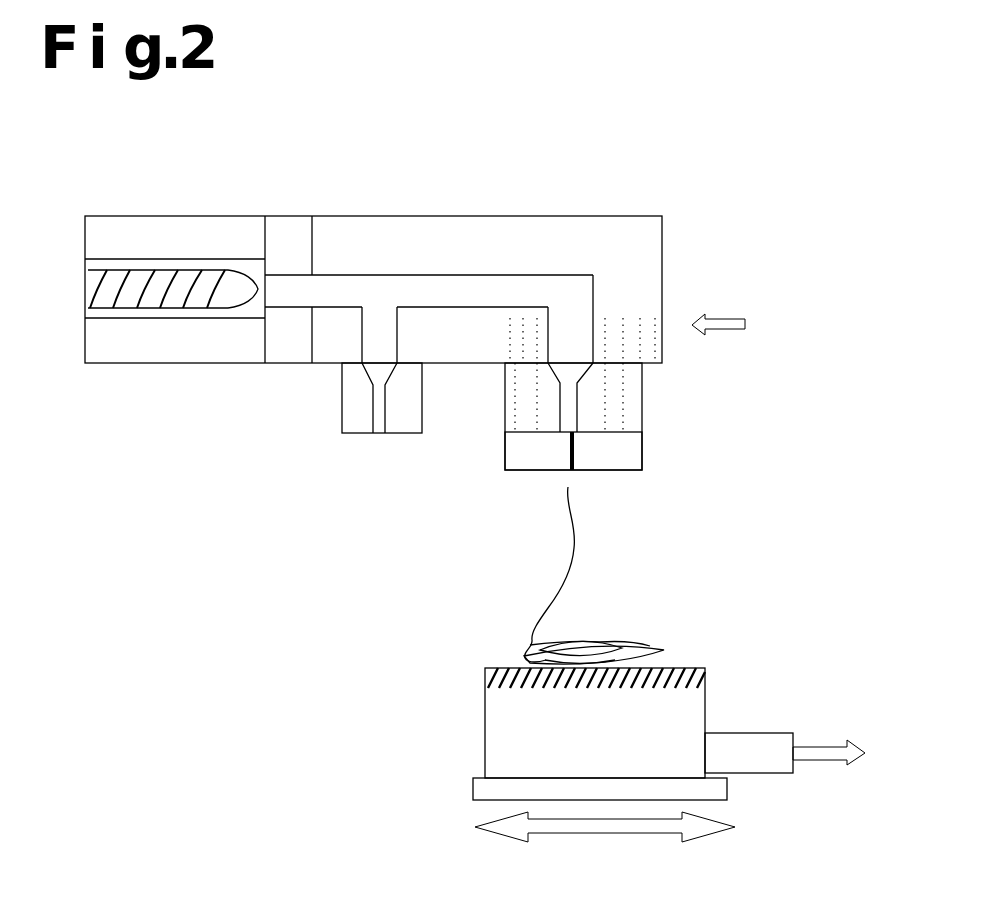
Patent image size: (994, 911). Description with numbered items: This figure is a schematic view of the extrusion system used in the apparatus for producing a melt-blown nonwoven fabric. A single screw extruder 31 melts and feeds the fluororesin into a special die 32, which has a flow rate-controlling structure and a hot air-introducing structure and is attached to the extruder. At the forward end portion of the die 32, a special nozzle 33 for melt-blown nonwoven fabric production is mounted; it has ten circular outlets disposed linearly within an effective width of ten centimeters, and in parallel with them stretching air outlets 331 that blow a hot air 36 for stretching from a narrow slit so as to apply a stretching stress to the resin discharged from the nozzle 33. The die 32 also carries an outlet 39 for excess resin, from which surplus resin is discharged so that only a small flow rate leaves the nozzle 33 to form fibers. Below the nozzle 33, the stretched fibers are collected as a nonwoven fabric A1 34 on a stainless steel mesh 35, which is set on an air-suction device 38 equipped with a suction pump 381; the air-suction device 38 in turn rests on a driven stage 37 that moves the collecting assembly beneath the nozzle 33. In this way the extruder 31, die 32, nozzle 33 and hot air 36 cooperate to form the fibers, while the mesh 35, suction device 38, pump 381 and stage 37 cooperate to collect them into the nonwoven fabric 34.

The single screw extruder 31 is at (177, 213).
The special die 32 is at (477, 213).
The special nozzle 33 is at (643, 458).
The stretching air outlets 331 is at (600, 453).
The nonwoven fabric A1 34 is at (510, 632).
The stainless steel mesh 35 is at (673, 657).
The hot air for stretching 36 is at (747, 323).
The driven stage 37 is at (468, 795).
The air-suction device 38 is at (617, 723).
The suction pump 381 is at (768, 727).
The outlet for excess resin 39 is at (358, 443).